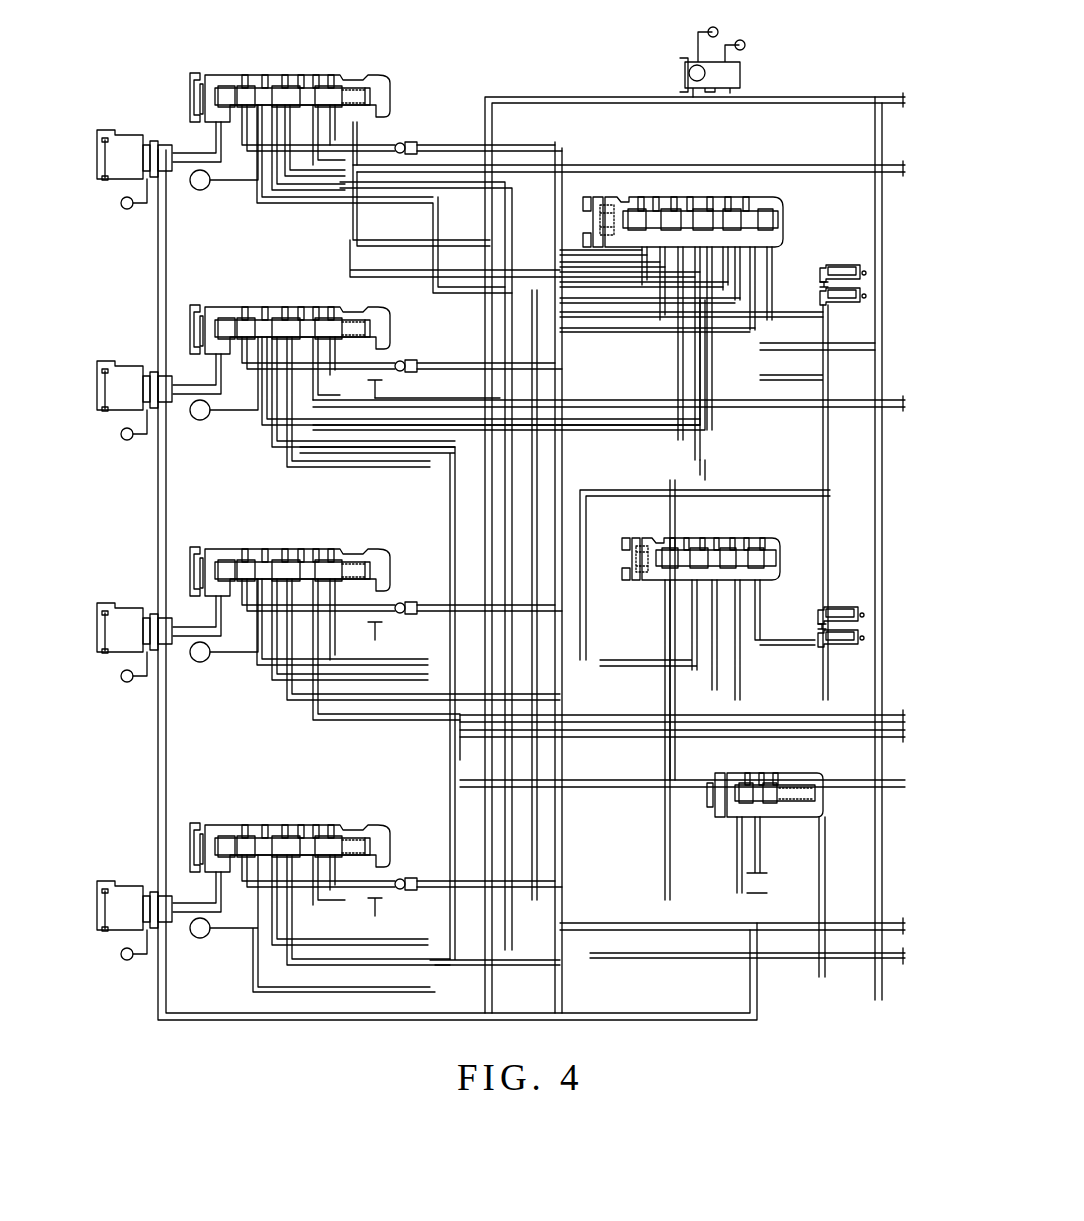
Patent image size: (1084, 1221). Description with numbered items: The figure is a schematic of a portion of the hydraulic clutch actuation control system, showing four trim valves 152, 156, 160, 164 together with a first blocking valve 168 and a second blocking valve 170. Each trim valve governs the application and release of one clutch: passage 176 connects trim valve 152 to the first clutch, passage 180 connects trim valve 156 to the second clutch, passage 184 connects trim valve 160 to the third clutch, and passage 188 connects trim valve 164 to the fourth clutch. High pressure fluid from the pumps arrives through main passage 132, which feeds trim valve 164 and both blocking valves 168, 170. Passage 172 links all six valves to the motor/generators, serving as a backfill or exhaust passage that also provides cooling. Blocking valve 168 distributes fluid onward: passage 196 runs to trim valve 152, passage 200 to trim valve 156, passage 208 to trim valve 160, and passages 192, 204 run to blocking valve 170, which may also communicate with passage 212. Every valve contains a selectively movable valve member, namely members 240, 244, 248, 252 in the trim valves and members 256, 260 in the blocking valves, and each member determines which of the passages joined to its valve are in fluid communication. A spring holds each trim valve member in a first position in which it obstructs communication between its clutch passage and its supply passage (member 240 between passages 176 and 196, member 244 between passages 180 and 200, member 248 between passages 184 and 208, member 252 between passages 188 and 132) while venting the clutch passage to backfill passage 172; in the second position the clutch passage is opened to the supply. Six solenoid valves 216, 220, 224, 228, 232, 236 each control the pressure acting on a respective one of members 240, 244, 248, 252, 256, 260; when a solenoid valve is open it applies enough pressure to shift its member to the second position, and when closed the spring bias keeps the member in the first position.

The main passage 132 is at (638, 932).
The trim valve 152 is at (210, 68).
The trim valve 156 is at (208, 303).
The trim valve 160 is at (208, 545).
The trim valve 164 is at (208, 822).
The blocking valve 168 is at (778, 198).
The blocking valve 170 is at (766, 526).
The backfill passage 172 is at (596, 97).
The passage 176 is at (322, 199).
The passage 180 is at (463, 393).
The passage 184 is at (360, 725).
The passage 188 is at (470, 971).
The passage 192 is at (596, 588).
The passage 196 is at (355, 268).
The passage 200 is at (328, 422).
The passage 204 is at (595, 675).
The passage 208 is at (320, 707).
The passage 212 is at (364, 462).
The solenoid valve 216 is at (130, 140).
The solenoid valve 220 is at (130, 373).
The solenoid valve 224 is at (132, 615).
The solenoid valve 228 is at (130, 893).
The solenoid valve 232 is at (831, 260).
The solenoid valve 236 is at (829, 607).
The valve member 240 is at (230, 86).
The valve member 244 is at (230, 318).
The valve member 248 is at (236, 558).
The valve member 252 is at (230, 835).
The valve member 256 is at (625, 203).
The valve member 260 is at (638, 545).